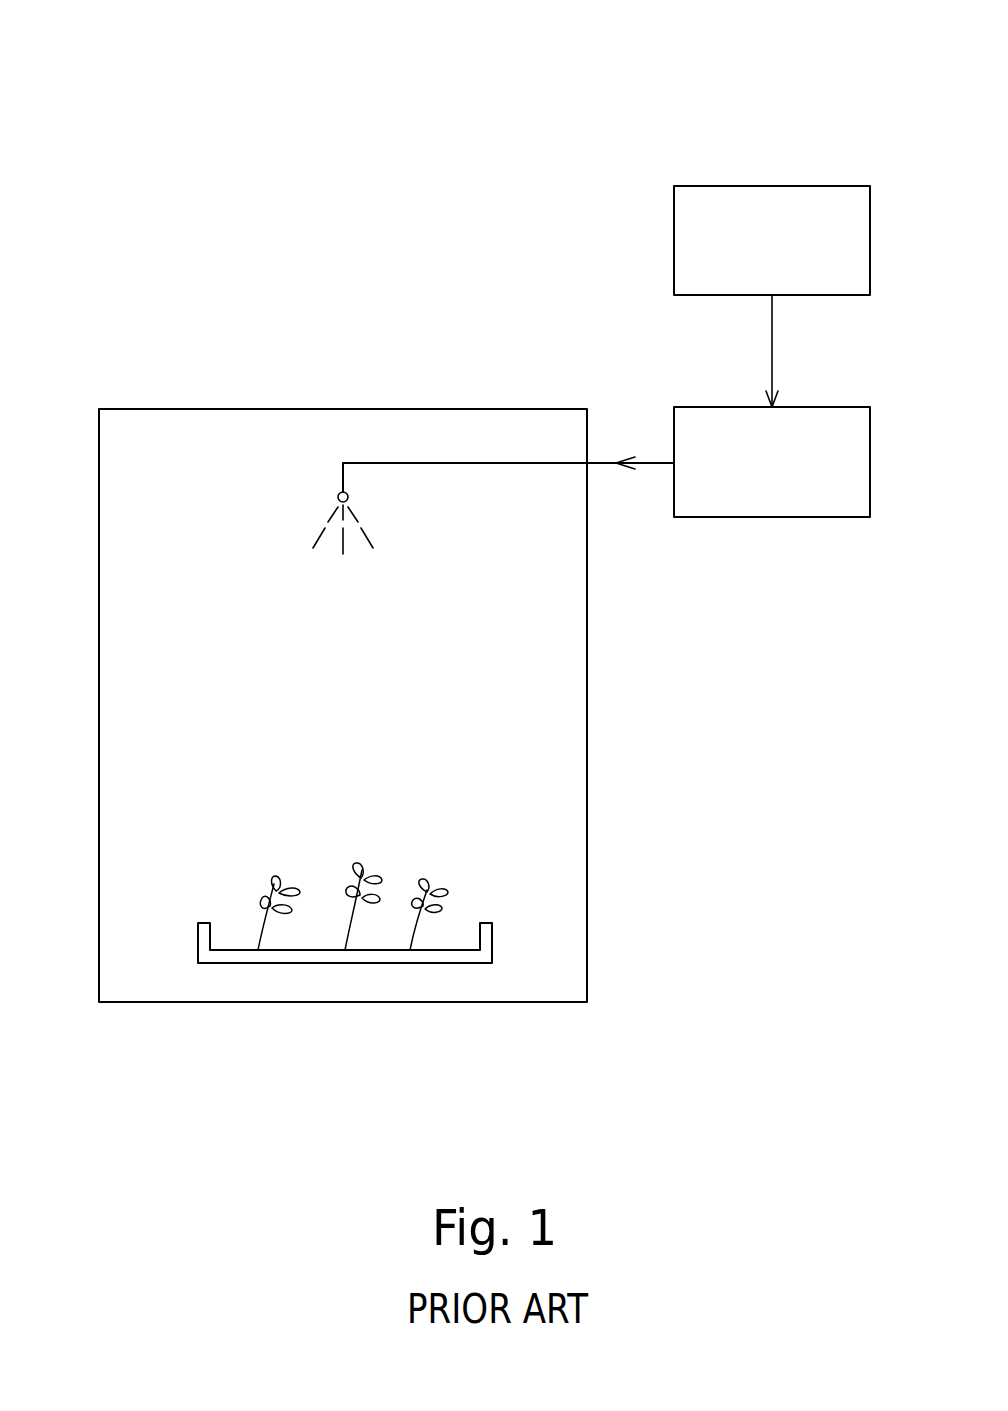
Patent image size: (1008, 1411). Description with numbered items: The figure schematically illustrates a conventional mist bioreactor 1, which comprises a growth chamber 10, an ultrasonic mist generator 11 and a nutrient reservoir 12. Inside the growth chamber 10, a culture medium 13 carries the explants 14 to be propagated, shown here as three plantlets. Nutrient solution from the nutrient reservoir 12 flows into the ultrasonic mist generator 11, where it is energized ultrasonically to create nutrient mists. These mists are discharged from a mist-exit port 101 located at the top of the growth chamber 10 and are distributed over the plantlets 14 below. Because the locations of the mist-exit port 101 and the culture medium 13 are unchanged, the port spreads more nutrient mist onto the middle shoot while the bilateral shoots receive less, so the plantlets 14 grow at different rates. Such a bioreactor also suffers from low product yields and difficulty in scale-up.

The mist bioreactor 1 is at (64, 35).
The growth chamber 10 is at (557, 700).
The mist-exit port 101 is at (340, 491).
The ultrasonic mist generator 11 is at (690, 428).
The nutrient reservoir 12 is at (690, 208).
The culture medium 13 is at (348, 953).
The explants 14 is at (272, 935).